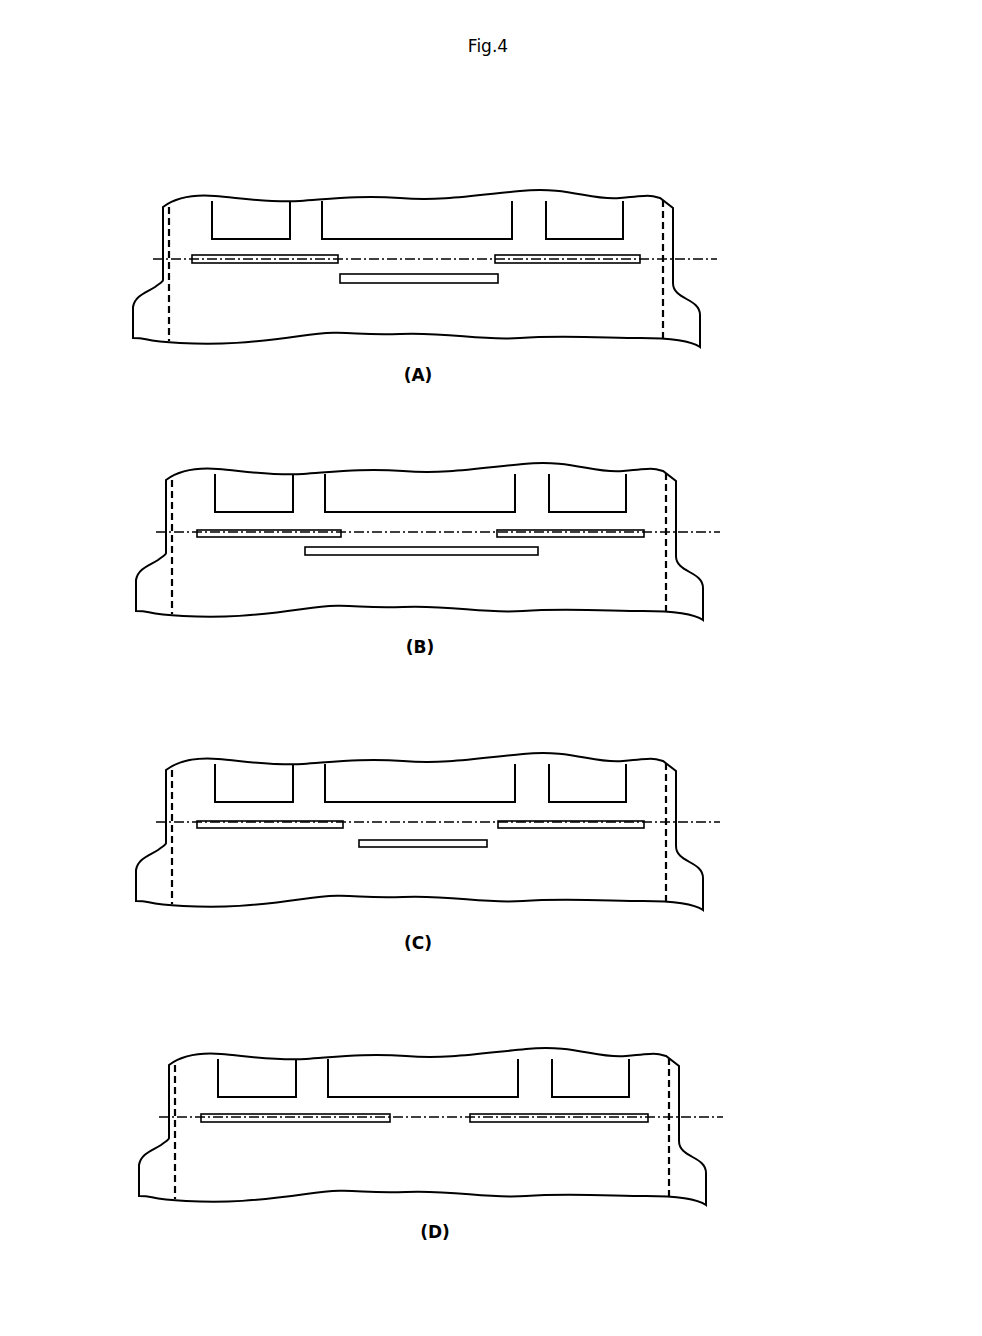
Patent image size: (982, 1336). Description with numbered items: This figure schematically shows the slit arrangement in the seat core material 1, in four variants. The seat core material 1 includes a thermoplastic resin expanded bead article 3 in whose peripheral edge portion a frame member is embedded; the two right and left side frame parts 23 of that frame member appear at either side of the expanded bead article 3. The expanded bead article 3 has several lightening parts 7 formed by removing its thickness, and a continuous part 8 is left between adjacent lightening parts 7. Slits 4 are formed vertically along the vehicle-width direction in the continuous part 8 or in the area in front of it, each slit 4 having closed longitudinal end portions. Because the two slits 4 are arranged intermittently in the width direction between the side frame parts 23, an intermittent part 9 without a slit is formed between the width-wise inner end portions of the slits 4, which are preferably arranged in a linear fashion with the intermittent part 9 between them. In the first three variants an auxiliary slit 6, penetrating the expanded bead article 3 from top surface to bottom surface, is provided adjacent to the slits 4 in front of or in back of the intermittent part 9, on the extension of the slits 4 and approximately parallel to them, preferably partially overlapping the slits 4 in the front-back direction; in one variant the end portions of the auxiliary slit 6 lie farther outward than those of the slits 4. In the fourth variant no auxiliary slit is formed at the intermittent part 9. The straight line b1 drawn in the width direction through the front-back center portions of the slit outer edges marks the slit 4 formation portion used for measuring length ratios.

The seat core material 1 is at (642, 592).
The thermoplastic resin expanded bead article 3 is at (451, 704).
The slit 4 is at (420, 627).
The auxiliary slit 6 is at (421, 489).
The lightening part 7 is at (419, 615).
The continuous part 8 is at (415, 608).
The intermittent part 9 is at (419, 259).
The side frame part 23 is at (431, 699).
The straight line b1 is at (466, 701).